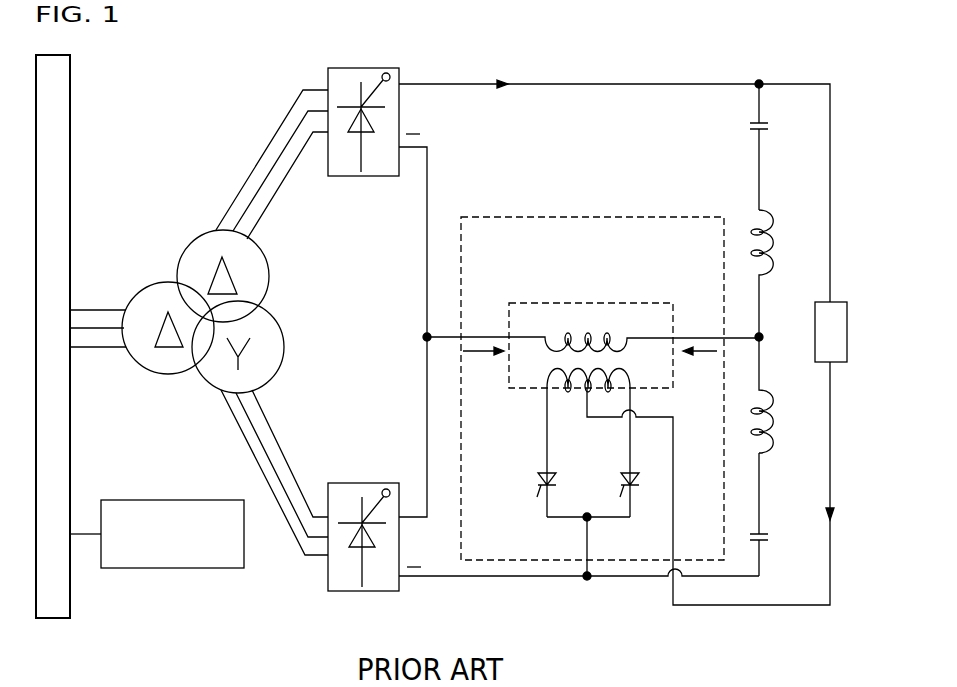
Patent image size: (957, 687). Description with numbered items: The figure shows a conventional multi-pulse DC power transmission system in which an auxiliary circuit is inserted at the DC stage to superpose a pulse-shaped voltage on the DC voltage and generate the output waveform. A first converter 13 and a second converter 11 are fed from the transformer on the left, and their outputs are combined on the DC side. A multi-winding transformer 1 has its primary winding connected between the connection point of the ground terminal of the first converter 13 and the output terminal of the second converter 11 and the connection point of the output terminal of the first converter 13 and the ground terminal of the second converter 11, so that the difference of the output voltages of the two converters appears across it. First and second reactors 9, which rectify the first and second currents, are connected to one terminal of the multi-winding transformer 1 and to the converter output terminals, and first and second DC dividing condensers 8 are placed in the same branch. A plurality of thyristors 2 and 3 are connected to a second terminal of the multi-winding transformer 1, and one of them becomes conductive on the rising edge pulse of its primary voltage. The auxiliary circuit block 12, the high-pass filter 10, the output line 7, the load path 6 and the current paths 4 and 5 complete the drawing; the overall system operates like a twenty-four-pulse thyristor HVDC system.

The multi-winding transformer 1 is at (591, 303).
The thyristor 2 is at (533, 457).
The thyristor 3 is at (623, 457).
The current Iu path 4 is at (700, 378).
The current I2 path 5 is at (483, 377).
The load current I0 line 6 is at (843, 417).
The DC output line 7 is at (614, 178).
The DC dividing condenser 8 is at (768, 330).
The reactor 9 is at (771, 331).
The high-pass filter 10 is at (157, 548).
The second converter 11 is at (375, 554).
The harmonic compensating circuit 12 is at (628, 398).
The first converter 13 is at (374, 138).